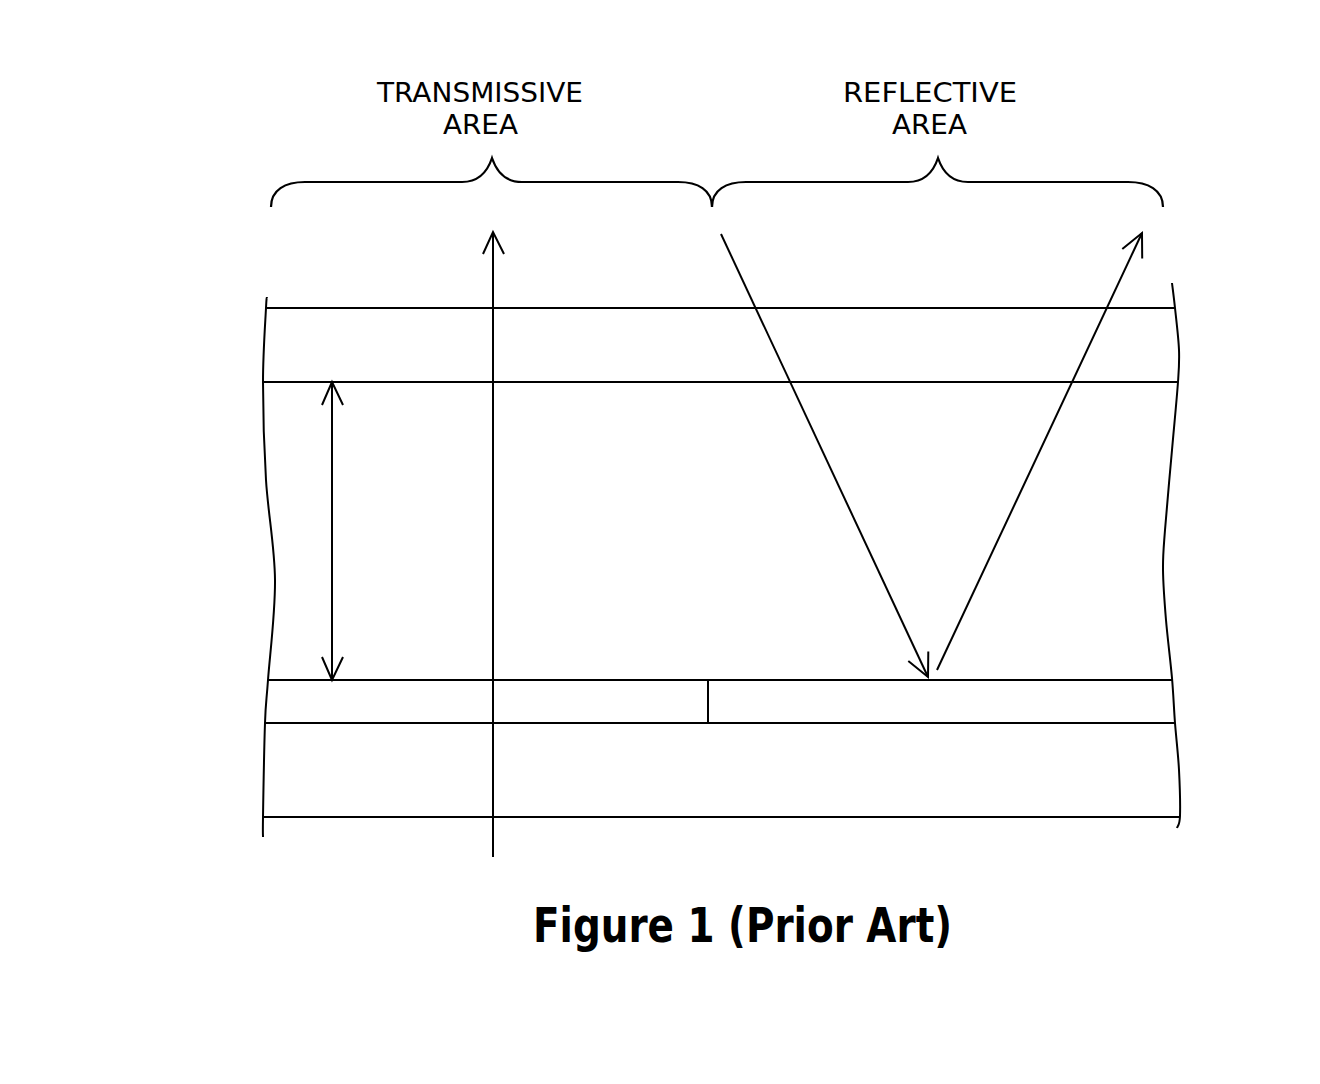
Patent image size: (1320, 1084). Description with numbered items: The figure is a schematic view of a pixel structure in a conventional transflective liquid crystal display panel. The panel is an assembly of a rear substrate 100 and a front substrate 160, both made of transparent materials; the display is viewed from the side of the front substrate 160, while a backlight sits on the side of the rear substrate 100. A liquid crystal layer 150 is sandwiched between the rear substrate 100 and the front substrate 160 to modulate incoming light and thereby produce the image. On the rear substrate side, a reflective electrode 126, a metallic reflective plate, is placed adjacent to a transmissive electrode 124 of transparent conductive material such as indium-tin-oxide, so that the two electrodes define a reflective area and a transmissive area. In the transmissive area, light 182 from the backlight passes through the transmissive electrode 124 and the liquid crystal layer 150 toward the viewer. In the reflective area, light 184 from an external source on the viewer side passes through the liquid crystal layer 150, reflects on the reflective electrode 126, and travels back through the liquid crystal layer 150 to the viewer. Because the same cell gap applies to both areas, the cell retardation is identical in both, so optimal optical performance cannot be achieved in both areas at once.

The rear substrate 100 is at (267, 790).
The transmissive electrode 124 is at (282, 700).
The reflective electrode 126 is at (1148, 702).
The liquid crystal layer 150 is at (297, 537).
The front substrate 160 is at (278, 347).
The light 182 is at (493, 517).
The light 184 is at (743, 273).